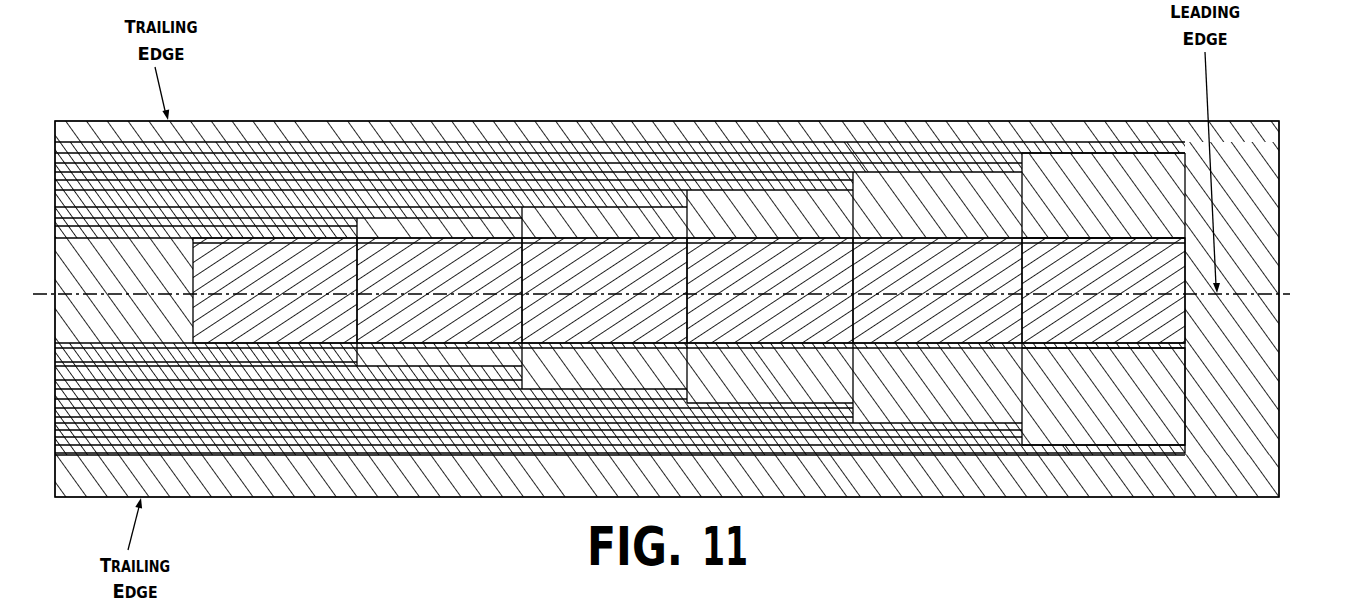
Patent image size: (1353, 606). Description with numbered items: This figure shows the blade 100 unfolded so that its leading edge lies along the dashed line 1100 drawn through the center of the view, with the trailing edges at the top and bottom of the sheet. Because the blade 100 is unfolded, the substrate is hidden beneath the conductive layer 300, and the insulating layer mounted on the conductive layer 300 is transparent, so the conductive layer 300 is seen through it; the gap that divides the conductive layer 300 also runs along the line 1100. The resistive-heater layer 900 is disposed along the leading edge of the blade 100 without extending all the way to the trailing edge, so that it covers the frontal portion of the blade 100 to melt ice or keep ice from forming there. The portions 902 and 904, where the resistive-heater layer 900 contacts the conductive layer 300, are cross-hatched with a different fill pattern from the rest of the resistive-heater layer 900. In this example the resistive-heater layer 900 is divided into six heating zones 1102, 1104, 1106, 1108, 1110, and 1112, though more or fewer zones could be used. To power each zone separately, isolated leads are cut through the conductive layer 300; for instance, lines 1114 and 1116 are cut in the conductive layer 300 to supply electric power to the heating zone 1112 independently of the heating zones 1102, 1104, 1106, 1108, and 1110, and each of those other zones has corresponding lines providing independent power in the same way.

The blade 100 is at (474, 80).
The conductive layer 300 is at (1245, 138).
The resistive-heater layer 900 is at (1132, 226).
The portion 902 is at (1053, 222).
The portion 904 is at (1129, 358).
The dashed line 1100 is at (686, 281).
The heating zone 1102 is at (247, 289).
The heating zone 1104 is at (401, 289).
The heating zone 1106 is at (581, 289).
The heating zone 1108 is at (734, 289).
The heating zone 1110 is at (912, 289).
The heating zone 1112 is at (1057, 289).
The line 1114 is at (891, 462).
The line 1116 is at (1030, 406).